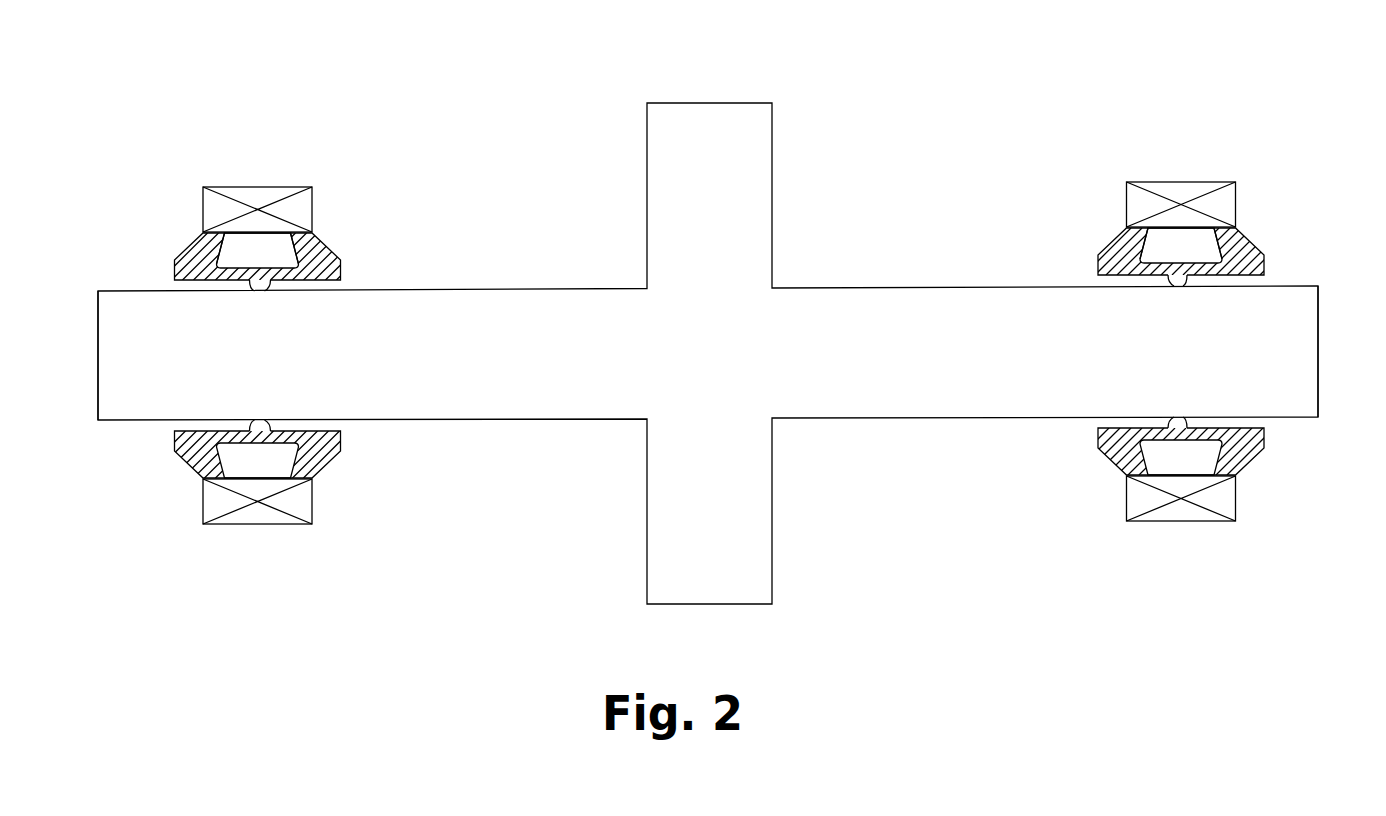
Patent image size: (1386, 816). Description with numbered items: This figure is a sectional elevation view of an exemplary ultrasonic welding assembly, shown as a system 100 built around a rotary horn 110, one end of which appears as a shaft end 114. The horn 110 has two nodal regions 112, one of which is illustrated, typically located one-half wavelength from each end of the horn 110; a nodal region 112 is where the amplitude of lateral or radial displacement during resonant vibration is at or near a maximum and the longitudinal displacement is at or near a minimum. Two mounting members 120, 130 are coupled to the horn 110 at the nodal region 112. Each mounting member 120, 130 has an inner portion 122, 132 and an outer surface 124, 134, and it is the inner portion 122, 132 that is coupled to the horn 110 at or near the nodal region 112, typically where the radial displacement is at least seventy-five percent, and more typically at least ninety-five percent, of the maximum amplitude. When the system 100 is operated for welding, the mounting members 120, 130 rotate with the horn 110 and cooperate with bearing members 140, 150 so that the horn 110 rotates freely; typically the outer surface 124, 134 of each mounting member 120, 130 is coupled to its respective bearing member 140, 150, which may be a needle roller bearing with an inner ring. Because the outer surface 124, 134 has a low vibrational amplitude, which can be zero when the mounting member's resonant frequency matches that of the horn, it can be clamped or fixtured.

The system 100 is at (928, 117).
The rotary horn 110 is at (917, 288).
The nodal region 112 is at (267, 291).
The shaft end 114 is at (98, 355).
The mounting member 120 is at (1112, 243).
The inner portion 122 is at (1172, 287).
The outer surface 124 is at (1140, 228).
The mounting member 130 is at (337, 262).
The inner portion 132 is at (265, 291).
The outer surface 134 is at (217, 223).
The bearing member 140 is at (1185, 184).
The bearing member 150 is at (258, 187).